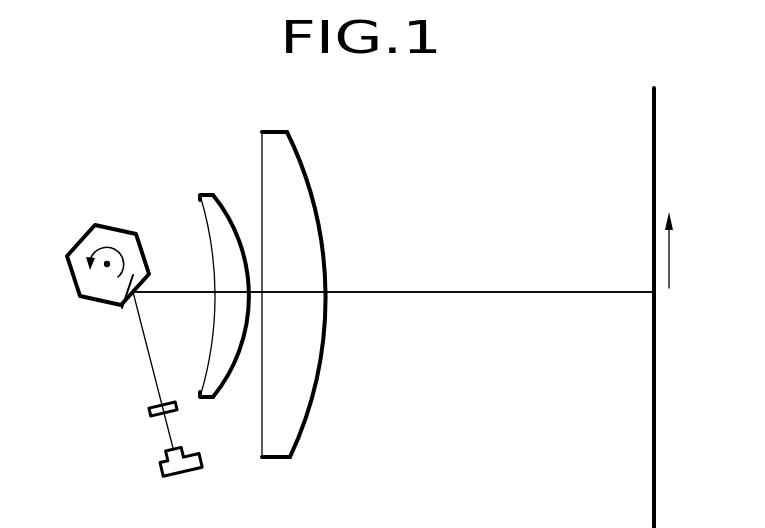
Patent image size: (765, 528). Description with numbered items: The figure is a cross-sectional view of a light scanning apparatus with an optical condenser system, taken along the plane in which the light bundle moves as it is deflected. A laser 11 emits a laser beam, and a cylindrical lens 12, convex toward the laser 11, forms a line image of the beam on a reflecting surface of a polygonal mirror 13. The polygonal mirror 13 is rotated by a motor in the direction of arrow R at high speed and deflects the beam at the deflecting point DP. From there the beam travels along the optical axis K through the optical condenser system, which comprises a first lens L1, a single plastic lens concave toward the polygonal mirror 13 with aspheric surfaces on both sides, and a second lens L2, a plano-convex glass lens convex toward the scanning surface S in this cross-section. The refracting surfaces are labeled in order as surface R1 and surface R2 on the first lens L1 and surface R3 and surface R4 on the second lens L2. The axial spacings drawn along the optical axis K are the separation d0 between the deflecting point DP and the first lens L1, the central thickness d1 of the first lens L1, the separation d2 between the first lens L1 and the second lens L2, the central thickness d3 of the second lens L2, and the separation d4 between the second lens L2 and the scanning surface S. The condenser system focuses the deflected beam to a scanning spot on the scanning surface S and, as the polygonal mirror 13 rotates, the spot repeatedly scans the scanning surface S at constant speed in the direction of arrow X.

The laser 11 is at (158, 463).
The cylindrical lens 12 is at (152, 413).
The polygonal mirror 13 is at (104, 238).
The direction of rotation of polygonal mirror R is at (90, 252).
The deflecting point DP is at (124, 308).
The first lens L1 is at (198, 270).
The second lens L2 is at (301, 275).
The first refracting surface R1 is at (203, 227).
The second refracting surface R2 is at (215, 200).
The third refracting surface R3 is at (258, 152).
The fourth refracting surface R4 is at (323, 227).
The axial surface separation between deflecting point and first lens d0 is at (170, 294).
The central thickness of first lens d1 is at (228, 290).
The axial surface separation between first and second lenses d2 is at (257, 290).
The central thickness of second lens d3 is at (292, 294).
The axial surface separation between second lens and scanning surface d4 is at (446, 294).
The optical axis K is at (545, 290).
The scanning surface S is at (653, 420).
The main scanning direction X is at (671, 245).